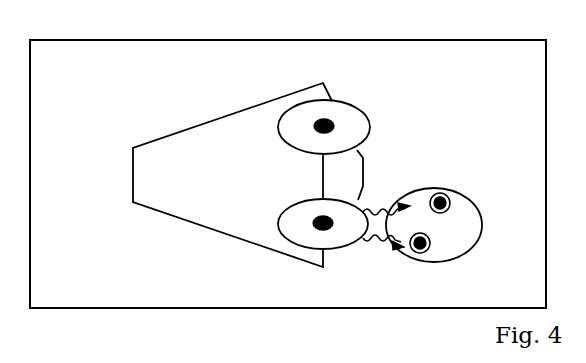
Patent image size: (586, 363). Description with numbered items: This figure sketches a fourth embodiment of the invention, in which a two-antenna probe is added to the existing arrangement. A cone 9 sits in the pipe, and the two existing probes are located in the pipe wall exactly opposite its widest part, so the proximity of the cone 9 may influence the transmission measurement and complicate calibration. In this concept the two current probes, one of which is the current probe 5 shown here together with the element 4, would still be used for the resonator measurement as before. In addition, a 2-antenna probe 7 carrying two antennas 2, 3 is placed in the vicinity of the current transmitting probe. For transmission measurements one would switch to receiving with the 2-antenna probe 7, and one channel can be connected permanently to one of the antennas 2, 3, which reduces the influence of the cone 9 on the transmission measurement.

The cone 9 is at (248, 175).
The upper roller 4 is at (324, 117).
The current probe 5 is at (323, 246).
The 2-antenna probe 7 is at (426, 223).
The antenna 2 is at (436, 195).
The antenna 3 is at (416, 254).